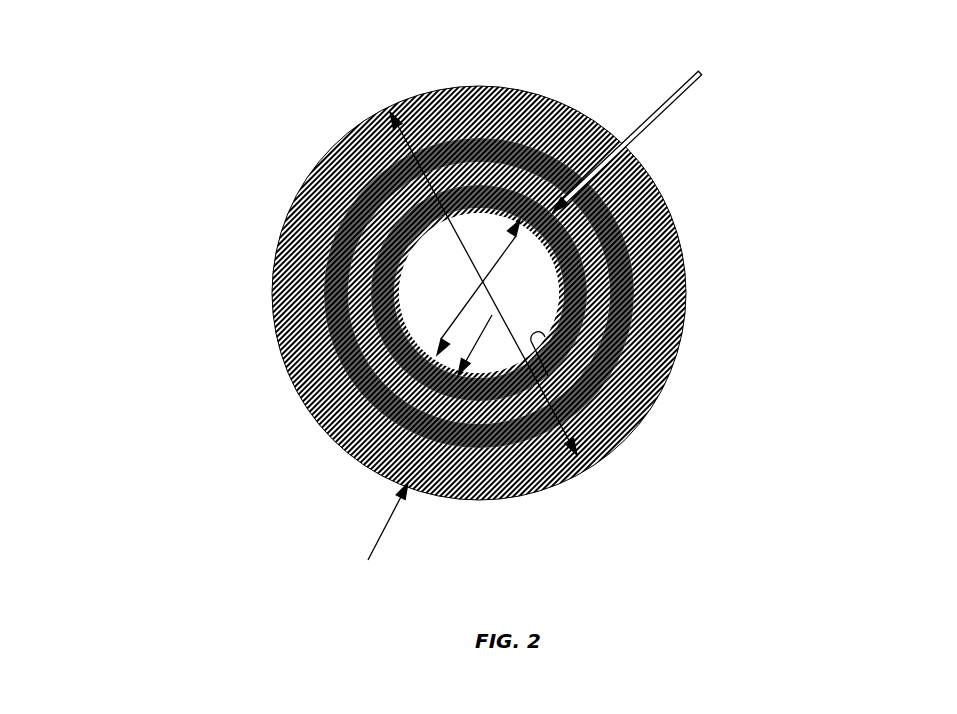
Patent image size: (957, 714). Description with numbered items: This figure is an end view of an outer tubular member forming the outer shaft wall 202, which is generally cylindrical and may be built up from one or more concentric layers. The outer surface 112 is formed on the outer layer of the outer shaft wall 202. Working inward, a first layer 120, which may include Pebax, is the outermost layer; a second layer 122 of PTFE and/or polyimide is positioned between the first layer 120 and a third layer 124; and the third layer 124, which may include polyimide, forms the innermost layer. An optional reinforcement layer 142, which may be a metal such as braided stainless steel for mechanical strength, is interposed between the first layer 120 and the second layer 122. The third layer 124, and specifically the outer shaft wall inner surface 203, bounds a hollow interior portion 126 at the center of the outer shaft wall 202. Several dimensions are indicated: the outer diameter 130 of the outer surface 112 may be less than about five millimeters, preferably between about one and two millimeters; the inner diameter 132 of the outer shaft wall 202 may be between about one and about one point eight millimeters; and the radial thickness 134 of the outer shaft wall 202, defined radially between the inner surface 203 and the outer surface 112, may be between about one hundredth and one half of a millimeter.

The outer surface 112 is at (665, 367).
The first layer 120 is at (290, 287).
The second layer 122 is at (600, 302).
The third layer 124 is at (642, 127).
The hollow interior portion 126 is at (460, 294).
The outer diameter 130 is at (483, 300).
The inner diameter 132 is at (483, 300).
The radial thickness 134 is at (387, 523).
The reinforcement layer 142 is at (345, 335).
The outer shaft wall 202 is at (833, 80).
The outer shaft wall inner surface 203 is at (548, 376).